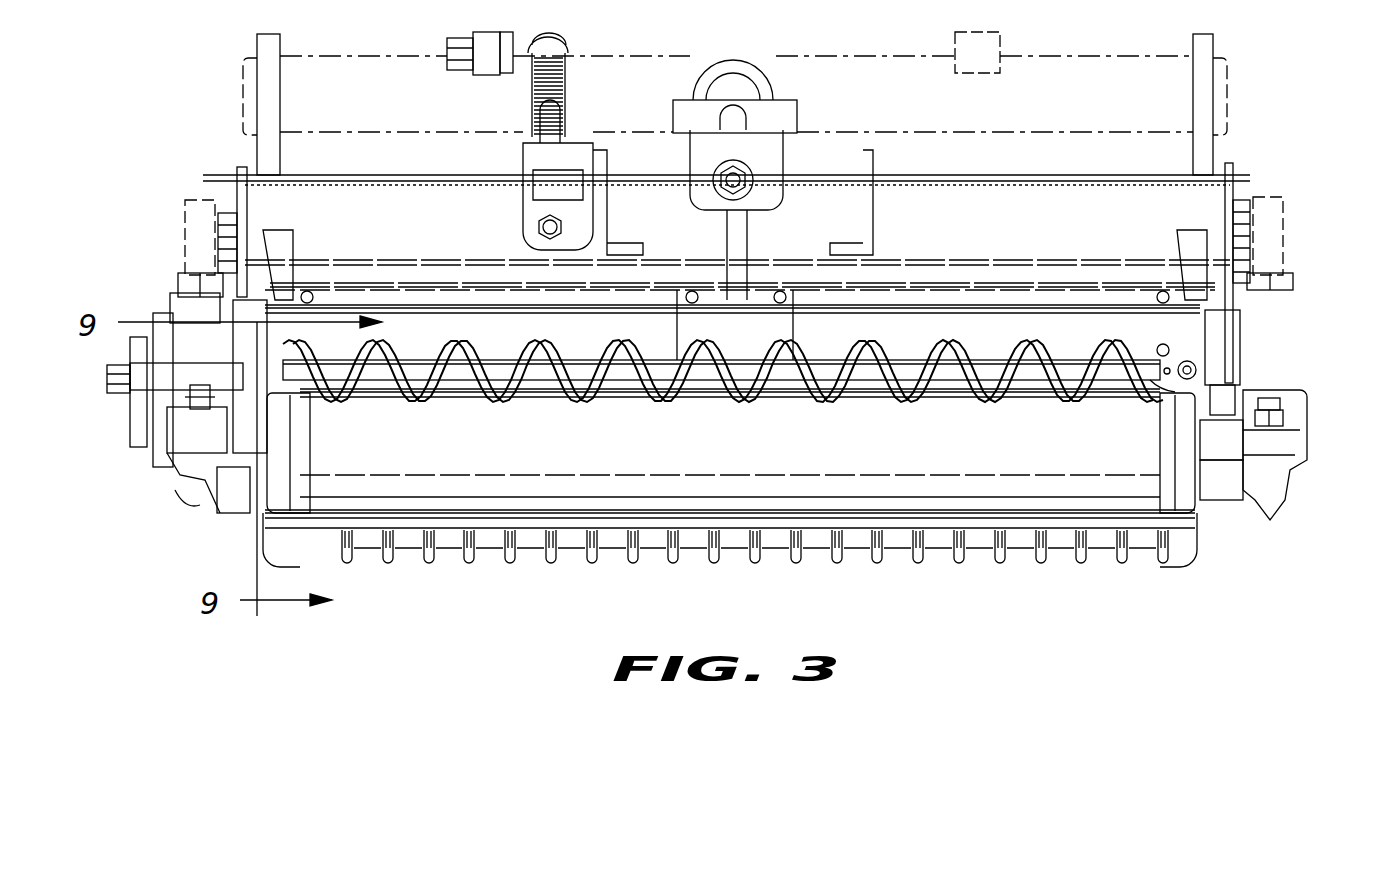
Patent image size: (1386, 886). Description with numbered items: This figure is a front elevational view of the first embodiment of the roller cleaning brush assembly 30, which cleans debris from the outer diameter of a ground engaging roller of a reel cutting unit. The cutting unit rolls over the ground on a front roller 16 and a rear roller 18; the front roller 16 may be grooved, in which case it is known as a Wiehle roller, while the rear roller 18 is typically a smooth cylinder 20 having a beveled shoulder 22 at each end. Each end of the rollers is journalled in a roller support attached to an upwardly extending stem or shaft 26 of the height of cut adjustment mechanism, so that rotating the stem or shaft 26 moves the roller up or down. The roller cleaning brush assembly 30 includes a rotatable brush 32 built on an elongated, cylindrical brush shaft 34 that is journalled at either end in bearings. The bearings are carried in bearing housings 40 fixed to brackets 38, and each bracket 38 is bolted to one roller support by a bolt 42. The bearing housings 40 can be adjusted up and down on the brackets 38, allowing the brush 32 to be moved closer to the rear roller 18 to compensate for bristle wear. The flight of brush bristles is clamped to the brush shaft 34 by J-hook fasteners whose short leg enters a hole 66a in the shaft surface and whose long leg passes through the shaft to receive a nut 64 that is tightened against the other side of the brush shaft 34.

The front roller 16 is at (506, 578).
The rear roller 18 is at (608, 497).
The smooth cylinder 20 is at (947, 480).
The beveled shoulder 22 is at (290, 450).
The stem or shaft 26 is at (1284, 214).
The roller cleaning brush assembly 30 is at (150, 246).
The rotatable brush 32 is at (576, 413).
The brush shaft 34 is at (705, 374).
The bracket 38 is at (1272, 437).
The bearing housing 40 is at (1216, 333).
The bolt 42 is at (1282, 399).
The nut 64 is at (1198, 370).
The hole 66a is at (1152, 396).